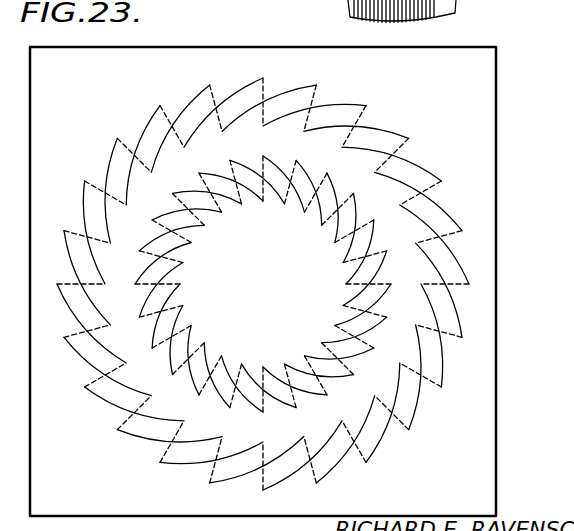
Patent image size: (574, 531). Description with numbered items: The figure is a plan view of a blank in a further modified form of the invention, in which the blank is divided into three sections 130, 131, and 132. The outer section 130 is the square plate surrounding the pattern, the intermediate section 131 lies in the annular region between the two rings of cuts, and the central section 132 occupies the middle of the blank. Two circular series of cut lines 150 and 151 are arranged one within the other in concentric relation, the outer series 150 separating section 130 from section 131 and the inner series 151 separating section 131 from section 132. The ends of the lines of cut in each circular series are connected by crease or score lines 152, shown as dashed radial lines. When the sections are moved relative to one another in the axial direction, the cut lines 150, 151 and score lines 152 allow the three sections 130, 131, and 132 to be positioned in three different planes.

The section 130 is at (476, 103).
The circular series of cut lines 150 is at (377, 123).
The circular series of cut lines 151 is at (273, 164).
The crease or score lines 152 is at (426, 185).
The section 131 is at (411, 271).
The section 132 is at (256, 307).